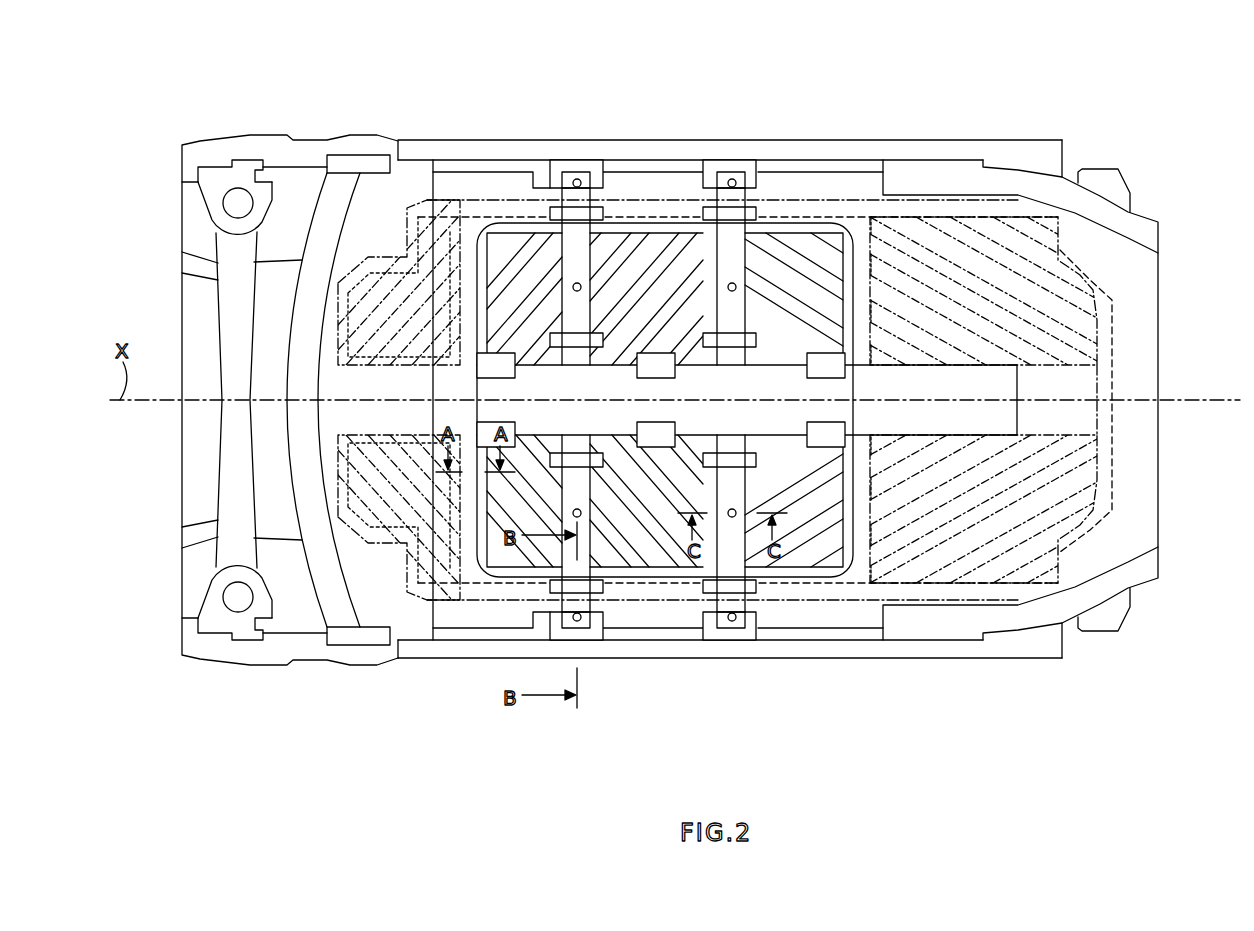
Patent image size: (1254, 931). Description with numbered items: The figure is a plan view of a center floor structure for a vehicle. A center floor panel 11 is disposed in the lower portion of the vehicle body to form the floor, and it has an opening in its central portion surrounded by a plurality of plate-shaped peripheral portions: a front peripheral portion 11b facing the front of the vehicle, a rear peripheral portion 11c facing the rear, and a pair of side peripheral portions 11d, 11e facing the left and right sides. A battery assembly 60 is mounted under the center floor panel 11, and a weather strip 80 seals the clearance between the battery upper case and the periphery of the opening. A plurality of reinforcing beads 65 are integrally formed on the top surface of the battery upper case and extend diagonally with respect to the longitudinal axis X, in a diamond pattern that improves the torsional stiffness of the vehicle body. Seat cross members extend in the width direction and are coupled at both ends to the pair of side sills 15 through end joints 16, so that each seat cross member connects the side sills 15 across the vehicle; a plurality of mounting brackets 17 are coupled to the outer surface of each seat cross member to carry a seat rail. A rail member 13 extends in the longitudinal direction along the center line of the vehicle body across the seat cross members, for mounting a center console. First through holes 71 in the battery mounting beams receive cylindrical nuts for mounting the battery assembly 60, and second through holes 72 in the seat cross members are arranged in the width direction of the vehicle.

The center floor panel 11 is at (460, 545).
The front peripheral portion 11b is at (458, 262).
The rear peripheral portion 11c is at (865, 330).
The side peripheral portion 11d is at (490, 652).
The side peripheral portion 11e is at (537, 207).
The rail member 13 is at (686, 387).
The side sill 15 is at (834, 128).
The end joint 16 is at (578, 160).
The mounting bracket 17 is at (598, 330).
The battery assembly 60 is at (1112, 433).
The reinforcing bead 65 is at (510, 262).
The first through hole 71 is at (579, 181).
The second through hole 72 is at (575, 453).
The weather strip 80 is at (852, 574).